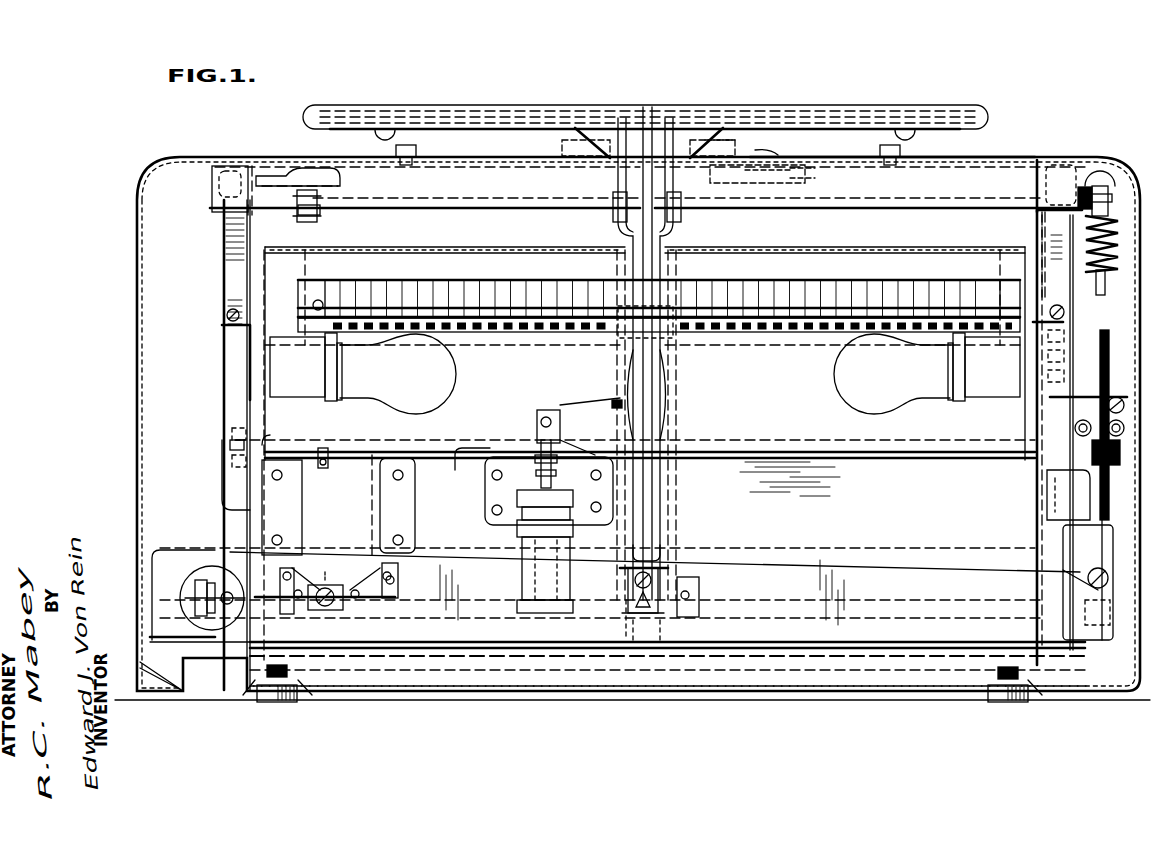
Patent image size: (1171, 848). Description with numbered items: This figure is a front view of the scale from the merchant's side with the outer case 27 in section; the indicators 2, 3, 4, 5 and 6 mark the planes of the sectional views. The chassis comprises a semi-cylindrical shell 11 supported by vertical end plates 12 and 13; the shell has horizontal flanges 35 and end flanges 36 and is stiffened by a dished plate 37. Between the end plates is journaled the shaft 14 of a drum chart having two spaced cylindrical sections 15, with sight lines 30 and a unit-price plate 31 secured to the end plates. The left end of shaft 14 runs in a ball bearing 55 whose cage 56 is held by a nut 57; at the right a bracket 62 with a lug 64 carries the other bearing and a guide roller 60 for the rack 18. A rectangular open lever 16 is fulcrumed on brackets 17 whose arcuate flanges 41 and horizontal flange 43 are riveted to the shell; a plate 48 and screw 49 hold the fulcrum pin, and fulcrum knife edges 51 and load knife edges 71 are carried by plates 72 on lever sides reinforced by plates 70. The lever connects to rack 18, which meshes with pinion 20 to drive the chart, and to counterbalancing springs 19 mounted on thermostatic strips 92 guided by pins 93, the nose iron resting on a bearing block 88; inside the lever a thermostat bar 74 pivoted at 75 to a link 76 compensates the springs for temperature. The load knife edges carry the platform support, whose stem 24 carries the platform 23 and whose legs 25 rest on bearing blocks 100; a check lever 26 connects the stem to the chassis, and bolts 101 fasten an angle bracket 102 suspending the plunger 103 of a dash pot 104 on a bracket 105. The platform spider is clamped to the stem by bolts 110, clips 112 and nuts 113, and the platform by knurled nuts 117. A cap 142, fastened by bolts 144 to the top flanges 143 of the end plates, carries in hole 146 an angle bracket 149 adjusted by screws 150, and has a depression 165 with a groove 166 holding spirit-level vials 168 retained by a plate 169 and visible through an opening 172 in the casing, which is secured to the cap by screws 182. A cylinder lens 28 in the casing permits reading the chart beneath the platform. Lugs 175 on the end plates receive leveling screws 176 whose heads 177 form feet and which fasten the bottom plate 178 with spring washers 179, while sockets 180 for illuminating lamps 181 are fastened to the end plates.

The section line 2- 2 is at (1170, 168).
The section line 3- 3 is at (176, 715).
The section line 4- 4 is at (1153, 722).
The section line 5- 5 is at (535, 707).
The section line 6- 6 is at (383, 237).
The semi-cylindrical shell 11 is at (770, 465).
The end plate 12 is at (226, 400).
The end plate 13 is at (1062, 355).
The shaft 14 is at (452, 450).
The cylindrical sections 15 is at (820, 238).
The lever 16 is at (822, 560).
The fulcrum brackets 17 is at (348, 478).
The rack 18 is at (1109, 365).
The counterbalancing springs 19 is at (1112, 278).
The pinion 20 is at (1082, 487).
The platform 23 is at (660, 103).
The stem 24 is at (660, 240).
The legs 25 is at (648, 545).
The check lever 26 is at (465, 205).
The outer case 27 is at (136, 380).
The cylinder lens 28 is at (768, 300).
The sight lines 30 is at (365, 300).
The plate 31 is at (522, 338).
The horizontal flanges 35 is at (472, 450).
The end flanges 36 is at (258, 522).
The dished semi-circular plate 37 is at (628, 650).
The arcuate flanges 41 is at (408, 498).
The horizontal flange 43 is at (338, 437).
The plate 48 is at (320, 615).
The screw 49 is at (335, 590).
The fulcrum knife edge 51 is at (343, 556).
The ball bearing 55 is at (228, 450).
The ball bearing cage 56 is at (263, 443).
The nut 57 is at (228, 433).
The guide roller 60 is at (1085, 418).
The bracket 62 is at (1116, 397).
The lug 64 is at (1118, 468).
The reinforcing plates 70 is at (870, 640).
The load knife edges 71 is at (644, 615).
The plates 72 is at (725, 578).
The thermostat metal bar 74 is at (195, 580).
The pivotal connection 75 is at (222, 585).
The link 76 is at (475, 628).
The bearing block 88 is at (1080, 640).
The thermostatic metal strips 92 is at (1058, 224).
The vertical pins 93 is at (1044, 192).
The bearing blocks 100 is at (660, 578).
The bolts 101 is at (670, 410).
The angle bracket 102 is at (590, 418).
The plunger 103 is at (545, 478).
The dash pot 104 is at (522, 586).
The bracket 105 is at (485, 495).
The bolts 110 is at (615, 140).
The clips 112 is at (615, 178).
The nuts 113 is at (718, 103).
The knurled nuts 117 is at (405, 108).
The cap 142 is at (880, 208).
The horizontal flanges 143 is at (222, 210).
The bolts 144 is at (255, 213).
The hole 146 is at (338, 170).
The angle bracket 149 is at (308, 216).
The screws 150 is at (280, 160).
The depression 165 is at (815, 183).
The groove 166 is at (717, 184).
The glass vials 168 is at (778, 185).
The plate 169 is at (815, 170).
The opening 172 is at (778, 150).
The lugs 175 is at (1040, 706).
The screws 176 is at (985, 690).
The heads 177 is at (1005, 712).
The bottom plate 178 is at (716, 690).
The spring washers 179 is at (248, 695).
The sockets 180 is at (992, 410).
The illuminating lamps 181 is at (843, 418).
The screws 182 is at (912, 143).